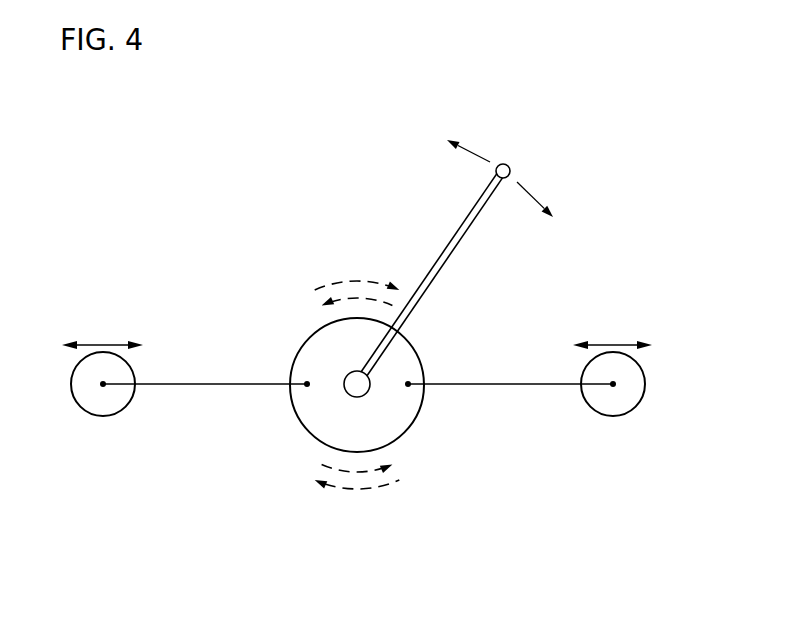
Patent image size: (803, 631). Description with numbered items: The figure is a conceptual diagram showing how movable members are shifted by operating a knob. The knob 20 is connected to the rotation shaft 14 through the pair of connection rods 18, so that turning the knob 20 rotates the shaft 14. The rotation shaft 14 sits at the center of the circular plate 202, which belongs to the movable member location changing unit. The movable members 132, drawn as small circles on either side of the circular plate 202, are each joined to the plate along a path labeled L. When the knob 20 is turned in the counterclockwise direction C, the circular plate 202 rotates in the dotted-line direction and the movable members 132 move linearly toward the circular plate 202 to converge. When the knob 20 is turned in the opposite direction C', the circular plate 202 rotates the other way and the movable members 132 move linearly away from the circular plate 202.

The rotation shaft 14 is at (357, 383).
The connection rods 18 is at (447, 253).
The knob 20 is at (504, 164).
The movable members 132 is at (103, 417).
The circular plate 202 is at (323, 418).